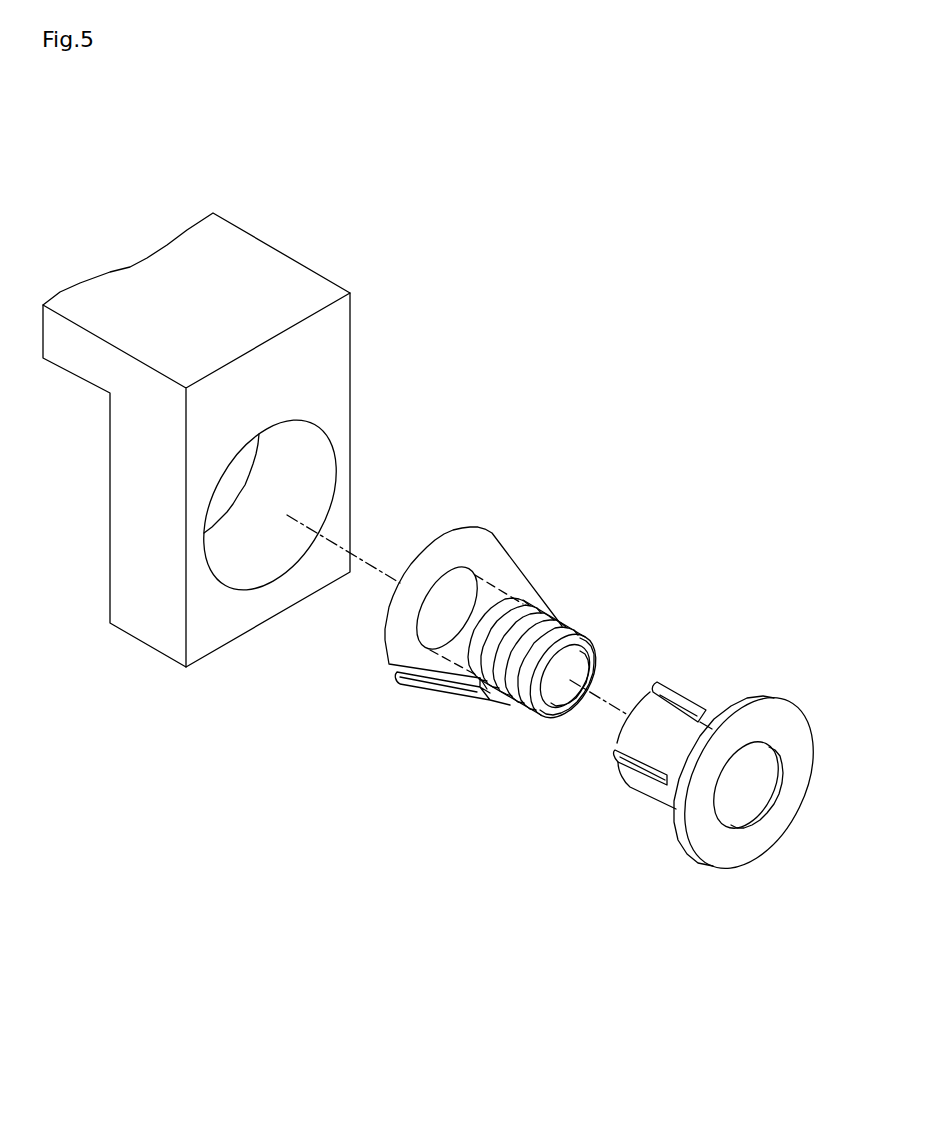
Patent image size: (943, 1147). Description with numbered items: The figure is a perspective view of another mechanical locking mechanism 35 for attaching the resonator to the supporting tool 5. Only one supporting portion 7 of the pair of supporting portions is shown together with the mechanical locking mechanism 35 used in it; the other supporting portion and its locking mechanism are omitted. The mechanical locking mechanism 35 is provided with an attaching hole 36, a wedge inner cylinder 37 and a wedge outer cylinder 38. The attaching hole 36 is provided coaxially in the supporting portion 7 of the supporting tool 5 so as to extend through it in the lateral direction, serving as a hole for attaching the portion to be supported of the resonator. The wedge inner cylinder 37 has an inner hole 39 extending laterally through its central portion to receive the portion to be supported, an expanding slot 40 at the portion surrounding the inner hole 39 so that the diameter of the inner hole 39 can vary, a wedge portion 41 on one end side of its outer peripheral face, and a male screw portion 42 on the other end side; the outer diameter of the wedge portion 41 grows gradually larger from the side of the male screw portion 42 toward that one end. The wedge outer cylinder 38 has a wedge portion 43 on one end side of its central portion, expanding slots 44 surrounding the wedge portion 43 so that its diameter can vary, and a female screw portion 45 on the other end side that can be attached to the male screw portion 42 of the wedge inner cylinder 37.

The supporting tool 5 is at (237, 257).
The supporting portion 7 is at (115, 558).
The attaching hole 36 is at (313, 470).
The mechanical locking mechanism 35 is at (496, 534).
The wedge portion 41 is at (513, 565).
The wedge inner cylinder 37 is at (550, 602).
The male screw portion 42 is at (575, 620).
The inner hole 39 is at (562, 705).
The expanding slot 40 is at (442, 683).
The wedge outer cylinder 38 is at (763, 698).
The expanding slots 44 is at (685, 702).
The wedge portion 43 is at (735, 808).
The female screw portion 45 is at (758, 812).